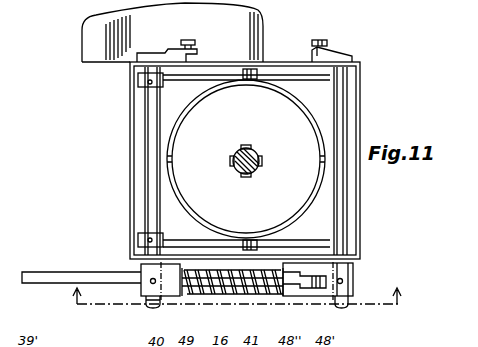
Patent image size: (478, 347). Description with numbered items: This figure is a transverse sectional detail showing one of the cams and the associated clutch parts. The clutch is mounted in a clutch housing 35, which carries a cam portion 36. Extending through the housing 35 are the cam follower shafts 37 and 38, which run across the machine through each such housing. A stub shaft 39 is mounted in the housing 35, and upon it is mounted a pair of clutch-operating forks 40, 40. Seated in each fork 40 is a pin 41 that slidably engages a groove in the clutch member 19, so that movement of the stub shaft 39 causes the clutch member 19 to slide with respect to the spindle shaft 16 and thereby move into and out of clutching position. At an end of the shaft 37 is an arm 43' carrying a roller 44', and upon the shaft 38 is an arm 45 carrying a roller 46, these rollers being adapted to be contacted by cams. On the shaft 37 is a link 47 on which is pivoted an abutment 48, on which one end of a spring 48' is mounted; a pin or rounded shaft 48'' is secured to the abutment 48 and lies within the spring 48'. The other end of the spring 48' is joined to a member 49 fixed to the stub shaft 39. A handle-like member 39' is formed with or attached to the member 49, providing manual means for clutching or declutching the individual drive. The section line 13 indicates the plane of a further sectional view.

The section line 13 is at (235, 312).
The spindle shaft 16 is at (257, 150).
The clutch member 19 is at (294, 101).
The clutch housing 35 is at (362, 75).
The cam portion 36 is at (262, 16).
The shaft 37 is at (345, 216).
The shaft 38 is at (148, 307).
The stub shaft 39 is at (126, 161).
The handle-like member 39' is at (81, 264).
The clutch-operating fork 40 is at (196, 76).
The pin 41 is at (259, 76).
The arm 43' is at (348, 43).
The roller 44' is at (329, 30).
The arm 45 is at (171, 48).
The roller 46 is at (187, 39).
The link 47 is at (355, 272).
The abutment 48 is at (304, 261).
The spring 48' is at (232, 299).
The pin or rounded shaft 48'' is at (232, 294).
The member 49 is at (140, 268).